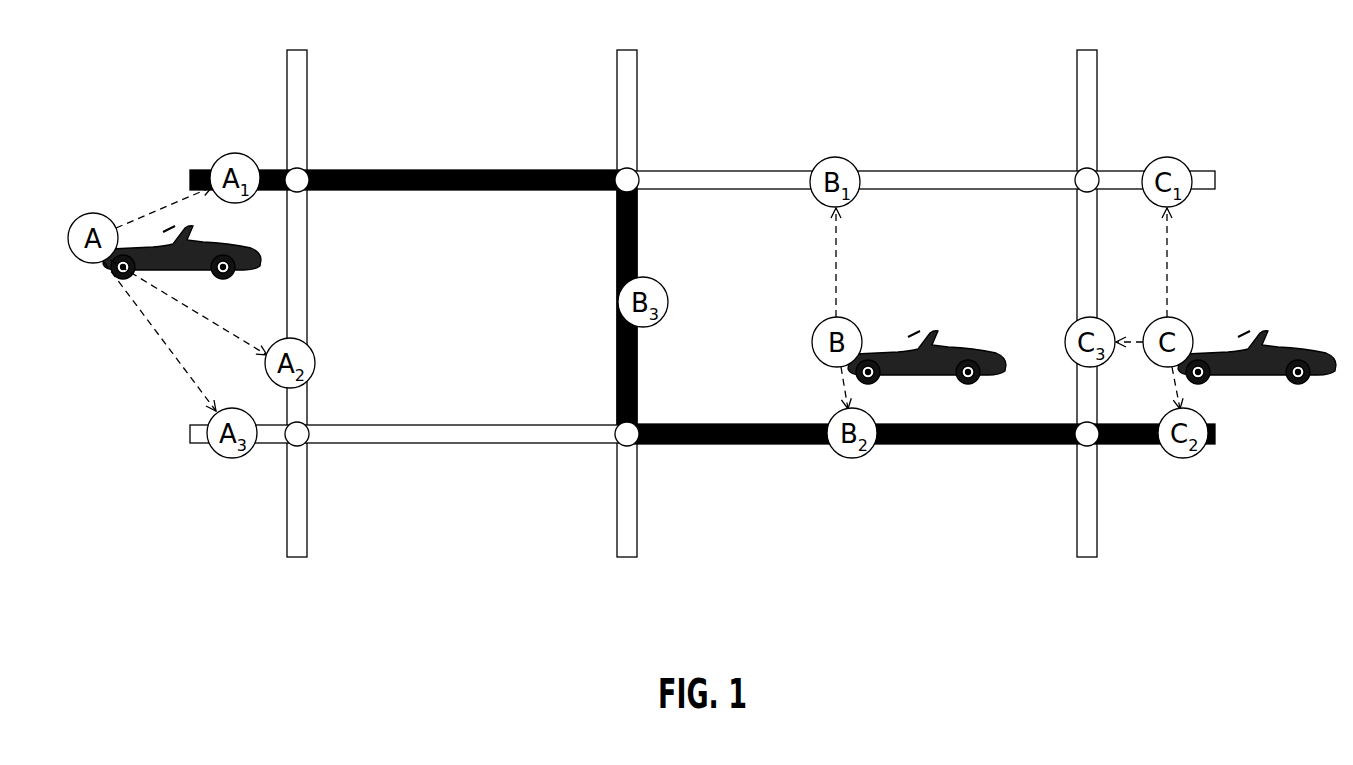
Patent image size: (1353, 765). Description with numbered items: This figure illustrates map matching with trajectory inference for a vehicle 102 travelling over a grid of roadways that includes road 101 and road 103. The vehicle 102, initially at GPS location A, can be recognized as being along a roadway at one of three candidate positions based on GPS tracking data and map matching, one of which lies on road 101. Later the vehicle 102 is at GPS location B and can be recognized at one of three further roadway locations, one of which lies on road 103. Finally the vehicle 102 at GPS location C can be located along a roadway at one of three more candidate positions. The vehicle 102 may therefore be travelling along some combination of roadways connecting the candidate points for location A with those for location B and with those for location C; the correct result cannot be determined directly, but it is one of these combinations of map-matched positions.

The roadway 101 is at (702, 163).
The vehicle 102 is at (1278, 287).
The roadway 103 is at (608, 307).